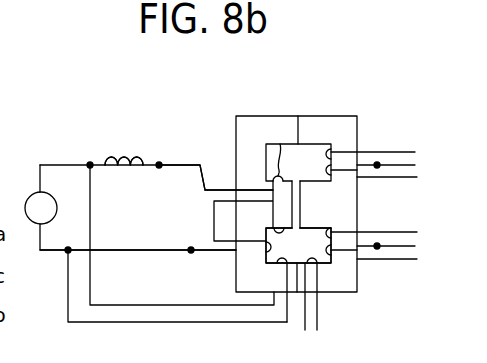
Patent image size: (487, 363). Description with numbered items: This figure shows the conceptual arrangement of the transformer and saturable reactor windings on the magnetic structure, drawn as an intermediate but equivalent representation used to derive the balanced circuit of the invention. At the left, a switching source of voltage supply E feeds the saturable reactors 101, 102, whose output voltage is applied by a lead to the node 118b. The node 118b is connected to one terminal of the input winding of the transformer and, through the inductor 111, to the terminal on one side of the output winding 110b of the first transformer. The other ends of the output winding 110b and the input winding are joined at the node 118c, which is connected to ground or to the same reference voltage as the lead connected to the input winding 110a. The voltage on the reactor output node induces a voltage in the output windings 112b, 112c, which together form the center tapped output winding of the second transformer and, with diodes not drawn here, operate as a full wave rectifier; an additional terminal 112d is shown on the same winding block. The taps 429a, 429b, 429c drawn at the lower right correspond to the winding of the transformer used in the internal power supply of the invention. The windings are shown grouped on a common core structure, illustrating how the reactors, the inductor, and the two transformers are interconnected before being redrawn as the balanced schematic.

The switching source of voltage supply E is at (25, 208).
The saturable reactor 101 is at (139, 149).
The saturable reactor 102 is at (145, 155).
The input winding of transformer 110 110a is at (283, 257).
The output winding of transformer 110 110b is at (250, 245).
The inductor 111 is at (280, 144).
The output winding of transformer 112 112b is at (415, 152).
The output winding of transformer 112 112c is at (417, 177).
The relay terminal 112d is at (415, 165).
The node 118b is at (215, 182).
The node 118c is at (191, 251).
The tap 429a is at (417, 232).
The tap 429b is at (417, 259).
The tap 429c is at (415, 246).